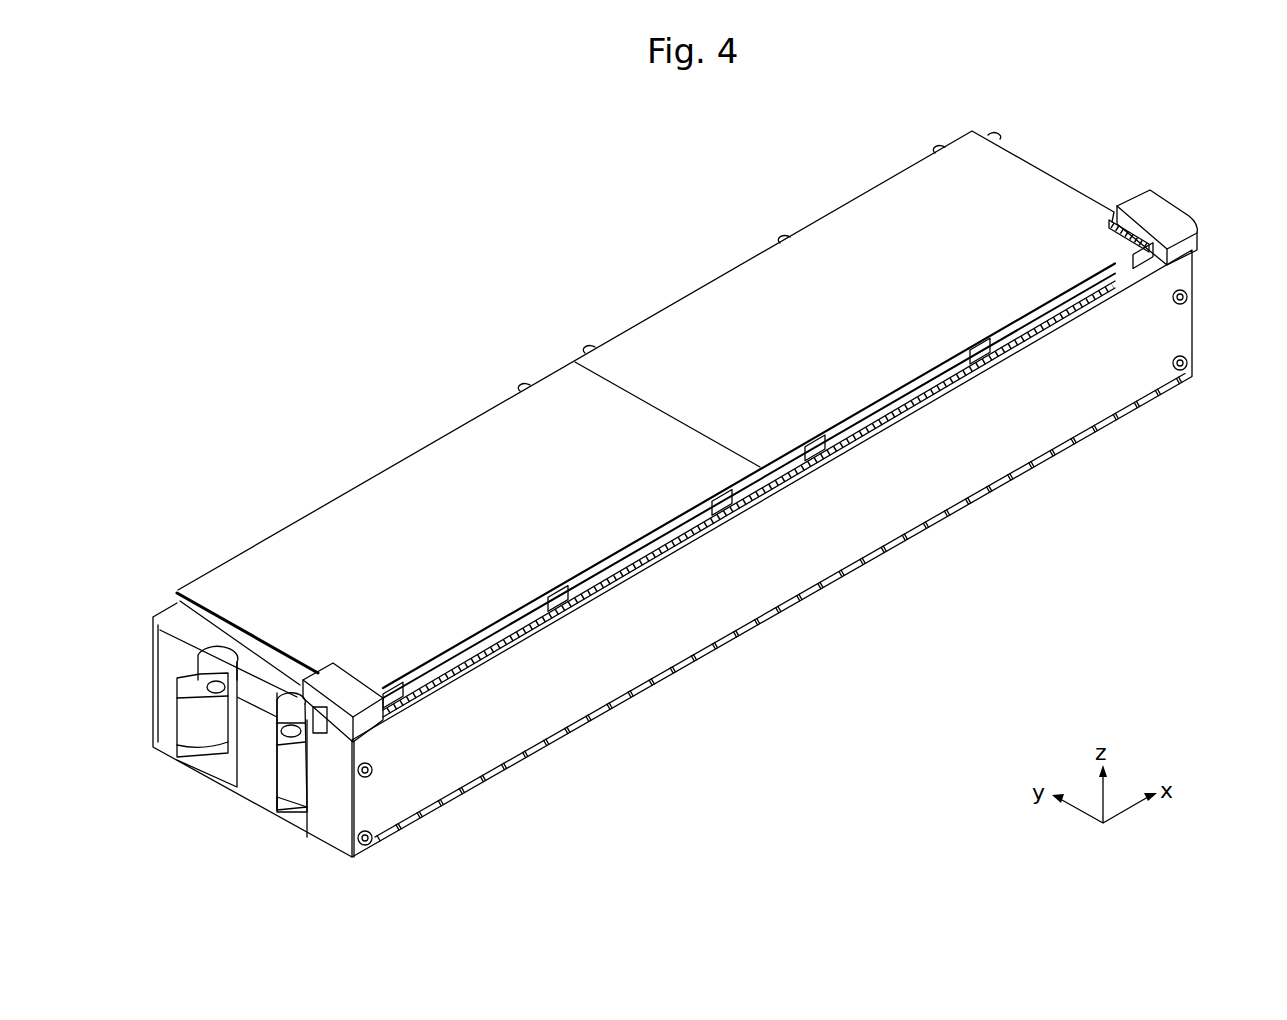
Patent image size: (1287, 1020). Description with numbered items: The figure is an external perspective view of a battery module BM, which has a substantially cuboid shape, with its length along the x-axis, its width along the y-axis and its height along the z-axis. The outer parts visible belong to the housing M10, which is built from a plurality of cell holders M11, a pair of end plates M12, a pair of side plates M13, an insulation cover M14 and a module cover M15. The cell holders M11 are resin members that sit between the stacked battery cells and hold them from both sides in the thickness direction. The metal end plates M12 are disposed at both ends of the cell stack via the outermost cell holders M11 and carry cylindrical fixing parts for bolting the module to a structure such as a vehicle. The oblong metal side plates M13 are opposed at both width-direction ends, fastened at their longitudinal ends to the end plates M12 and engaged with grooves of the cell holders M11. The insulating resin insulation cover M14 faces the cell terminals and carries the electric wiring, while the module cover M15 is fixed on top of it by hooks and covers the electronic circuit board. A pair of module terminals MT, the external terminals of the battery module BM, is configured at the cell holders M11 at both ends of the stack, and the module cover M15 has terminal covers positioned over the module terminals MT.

The battery module BM is at (701, 510).
The housing M10 is at (1032, 186).
The cell holders M11 is at (419, 830).
The end plates M12 is at (321, 826).
The side plates M13 is at (975, 456).
The insulation cover M14 is at (508, 642).
The module cover M15 is at (850, 212).
The module terminals MT is at (1183, 194).